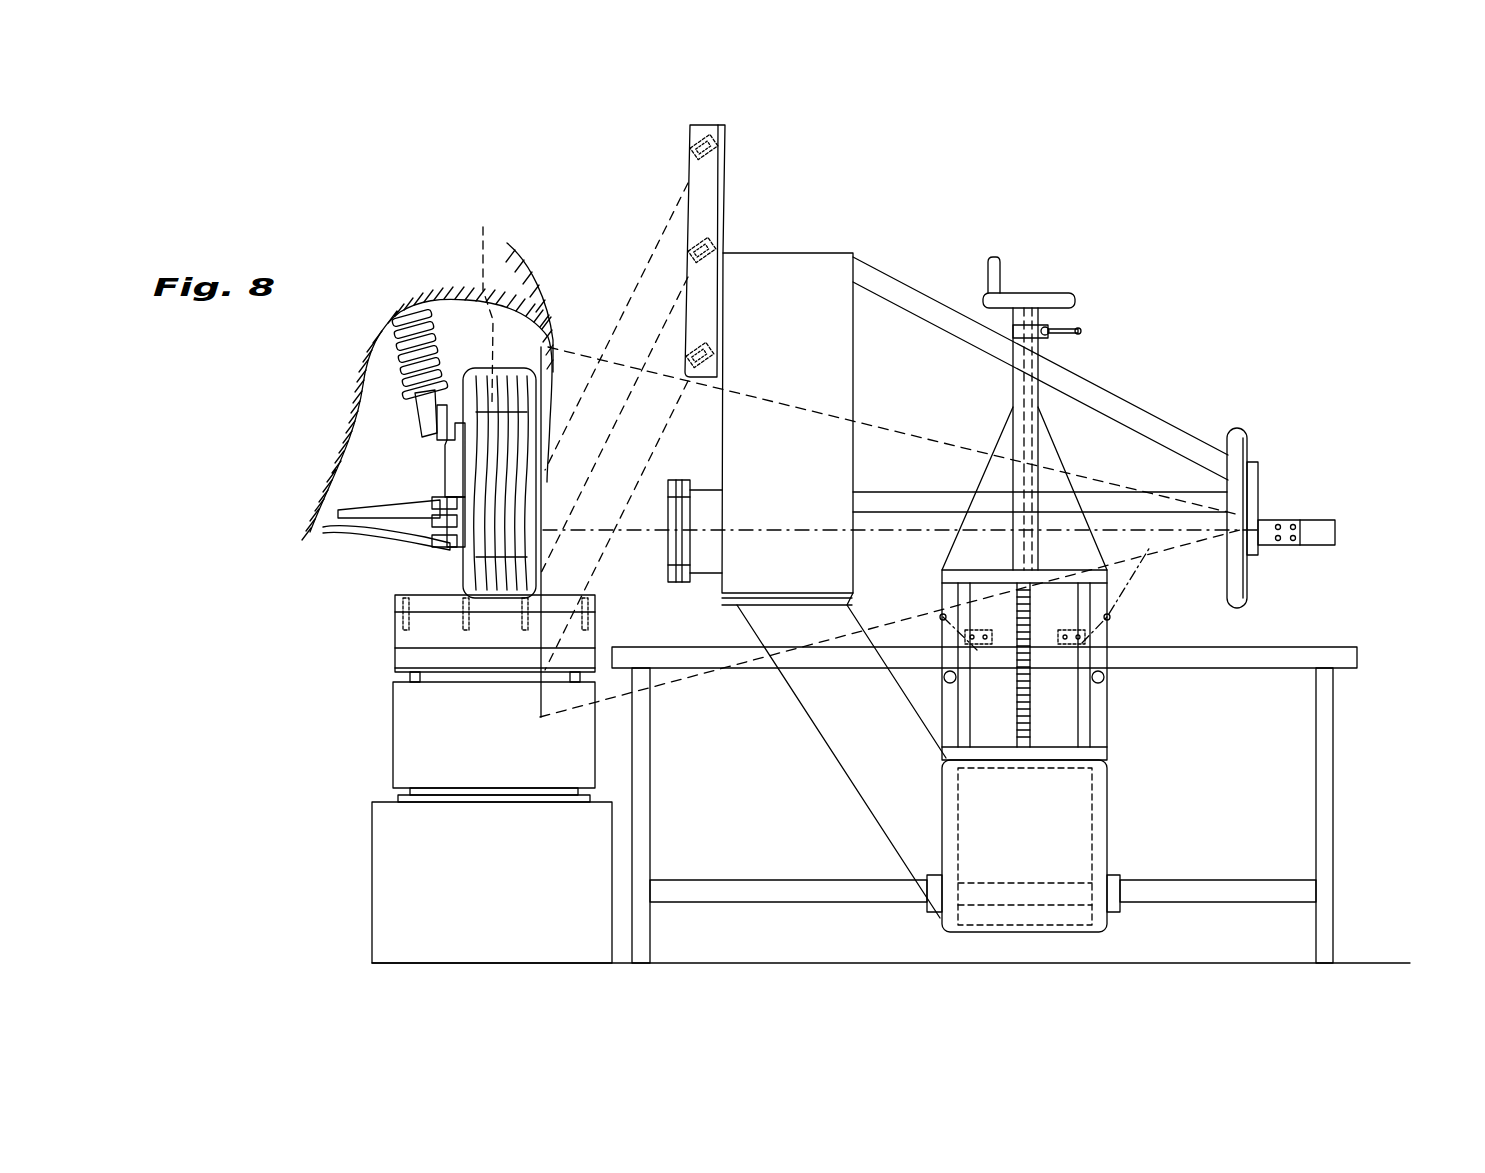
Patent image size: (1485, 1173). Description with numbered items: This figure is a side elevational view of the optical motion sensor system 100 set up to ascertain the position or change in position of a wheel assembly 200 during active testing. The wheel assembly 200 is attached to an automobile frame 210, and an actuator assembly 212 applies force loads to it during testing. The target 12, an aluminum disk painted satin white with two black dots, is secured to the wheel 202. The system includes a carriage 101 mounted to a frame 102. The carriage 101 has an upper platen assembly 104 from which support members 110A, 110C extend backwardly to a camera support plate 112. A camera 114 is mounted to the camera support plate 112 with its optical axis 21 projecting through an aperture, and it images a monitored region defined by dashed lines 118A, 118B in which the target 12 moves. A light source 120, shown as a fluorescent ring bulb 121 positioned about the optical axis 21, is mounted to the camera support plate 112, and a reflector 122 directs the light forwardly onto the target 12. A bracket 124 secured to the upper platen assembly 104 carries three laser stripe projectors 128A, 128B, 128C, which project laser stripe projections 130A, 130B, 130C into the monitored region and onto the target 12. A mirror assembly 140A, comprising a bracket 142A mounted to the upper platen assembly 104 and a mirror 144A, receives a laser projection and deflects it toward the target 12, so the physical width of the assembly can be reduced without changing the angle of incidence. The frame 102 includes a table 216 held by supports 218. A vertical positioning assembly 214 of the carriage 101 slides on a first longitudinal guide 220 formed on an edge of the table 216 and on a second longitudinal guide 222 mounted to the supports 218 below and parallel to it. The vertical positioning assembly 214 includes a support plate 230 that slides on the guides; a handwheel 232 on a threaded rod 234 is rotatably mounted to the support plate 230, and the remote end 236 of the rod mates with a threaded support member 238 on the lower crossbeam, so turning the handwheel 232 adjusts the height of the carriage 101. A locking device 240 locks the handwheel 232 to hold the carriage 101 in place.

The target 12 is at (565, 466).
The optical axis 21 is at (1047, 598).
The optical motion sensor system 100 is at (1105, 193).
The carriage 101 is at (1172, 375).
The frame 102 is at (1368, 623).
The upper platen assembly 104 is at (810, 238).
The support member 110A is at (1098, 388).
The support member 110C is at (1177, 492).
The camera support plate 112 is at (1260, 495).
The camera 114 is at (1337, 530).
The dashed line 118A is at (868, 428).
The dashed line 118B is at (673, 684).
The light source 120 is at (1272, 428).
The fluorescent ring bulb 121 is at (1227, 580).
The reflector 122 is at (1250, 590).
The bracket 124 is at (725, 207).
The laser stripe projector 128A is at (708, 150).
The laser stripe projector 128B is at (700, 250).
The laser stripe projector 128C is at (700, 355).
The laser stripe projection 130A is at (688, 195).
The laser stripe projection 130B is at (688, 402).
The laser stripe projection 130C is at (698, 505).
The mirror assembly 140A is at (697, 610).
The bracket 142A is at (700, 490).
The mirror 144A is at (688, 522).
The wheel assembly 200 is at (472, 357).
The wheel 202 is at (493, 300).
The automobile frame 210 is at (327, 537).
The actuator assembly 212 is at (382, 708).
The vertical positioning assembly 214 is at (1083, 277).
The table 216 is at (1357, 658).
The supports 218 is at (652, 858).
The first longitudinal guide 220 is at (1263, 672).
The second longitudinal guide 222 is at (1223, 883).
The support plate 230 is at (928, 572).
The handwheel 232 is at (1018, 290).
The threaded rod 234 is at (1030, 710).
The remote end 236 is at (1047, 762).
The threaded support member 238 is at (1010, 755).
The locking device 240 is at (1075, 320).